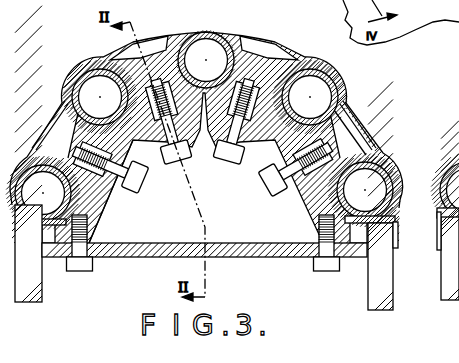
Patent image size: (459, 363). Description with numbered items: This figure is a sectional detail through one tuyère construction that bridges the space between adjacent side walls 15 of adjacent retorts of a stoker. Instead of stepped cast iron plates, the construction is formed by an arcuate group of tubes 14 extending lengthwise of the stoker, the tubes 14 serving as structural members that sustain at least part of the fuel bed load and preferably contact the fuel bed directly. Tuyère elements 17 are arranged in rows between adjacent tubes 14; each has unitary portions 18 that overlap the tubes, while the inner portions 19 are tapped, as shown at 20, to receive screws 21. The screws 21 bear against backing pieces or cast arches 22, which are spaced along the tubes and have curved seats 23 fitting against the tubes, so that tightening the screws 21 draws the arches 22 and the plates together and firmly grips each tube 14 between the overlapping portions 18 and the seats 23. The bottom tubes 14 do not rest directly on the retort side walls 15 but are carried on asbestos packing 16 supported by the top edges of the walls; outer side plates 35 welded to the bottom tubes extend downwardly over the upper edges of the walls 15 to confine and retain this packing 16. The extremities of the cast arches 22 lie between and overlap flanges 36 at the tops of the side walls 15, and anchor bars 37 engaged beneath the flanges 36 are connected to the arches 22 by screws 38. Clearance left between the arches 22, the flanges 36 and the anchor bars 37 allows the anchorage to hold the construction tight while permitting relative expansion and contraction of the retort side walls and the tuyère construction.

The tubes 14 is at (318, 64).
The retort side walls 15 is at (42, 280).
The asbestos packing 16 is at (397, 232).
The tuyère elements 17 is at (345, 125).
The overlapping portions 18 is at (340, 100).
The inner portions 19 is at (263, 168).
The tapped holes 20 is at (350, 148).
The screws 21 is at (268, 188).
The cast arches 22 is at (300, 203).
The curved seats 23 is at (118, 212).
The outer side plates 35 is at (386, 214).
The flanges 36 is at (340, 262).
The anchor bars 37 is at (288, 256).
The screws 38 is at (92, 264).